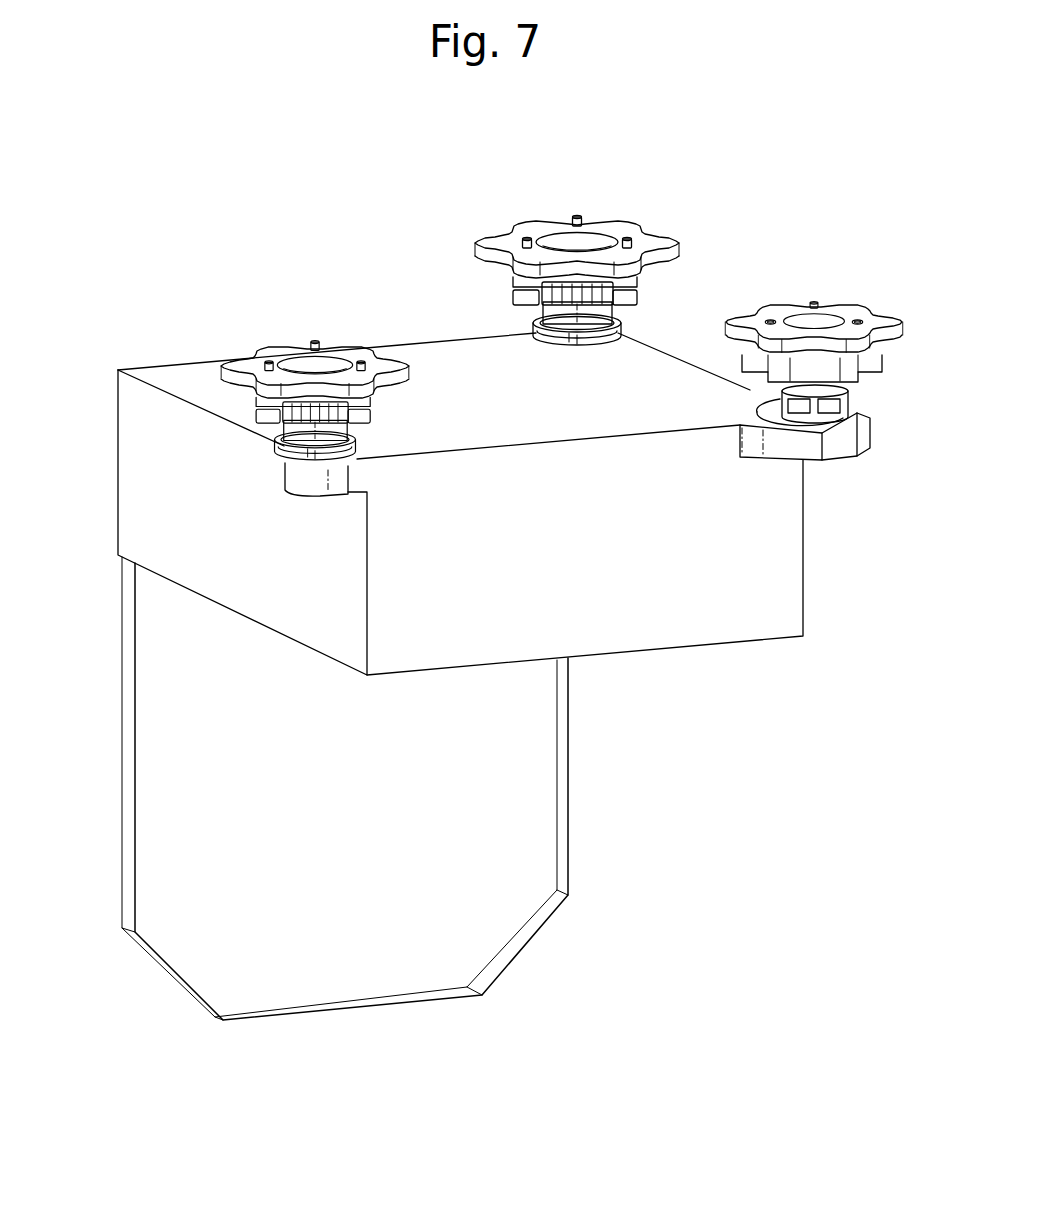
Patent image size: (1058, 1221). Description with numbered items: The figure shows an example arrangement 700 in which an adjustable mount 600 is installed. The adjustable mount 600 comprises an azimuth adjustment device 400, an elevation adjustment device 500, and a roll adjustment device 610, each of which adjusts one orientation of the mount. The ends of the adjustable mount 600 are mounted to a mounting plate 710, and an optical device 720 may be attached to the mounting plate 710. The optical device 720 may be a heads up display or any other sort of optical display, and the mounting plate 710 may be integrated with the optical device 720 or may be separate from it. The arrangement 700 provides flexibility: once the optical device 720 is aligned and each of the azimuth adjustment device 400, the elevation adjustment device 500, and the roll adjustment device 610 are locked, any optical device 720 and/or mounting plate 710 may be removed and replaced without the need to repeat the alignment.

The azimuth adjustment device 400 is at (823, 367).
The elevation adjustment device 500 is at (555, 314).
The adjustable mount 600 is at (639, 236).
The roll adjustment device 610 is at (290, 437).
The arrangement 700 is at (770, 214).
The mounting plate 710 is at (348, 484).
The optical device 720 is at (312, 968).